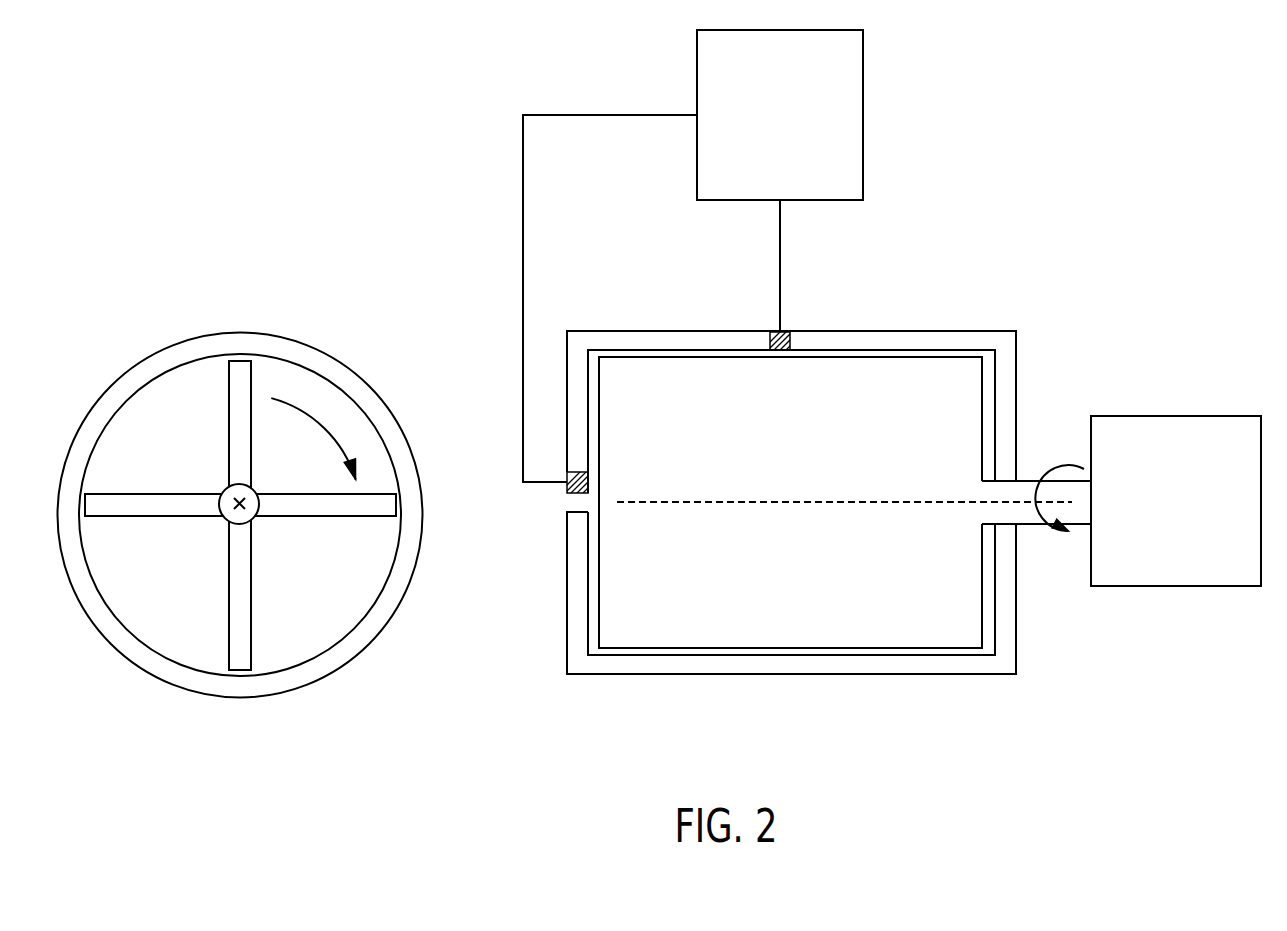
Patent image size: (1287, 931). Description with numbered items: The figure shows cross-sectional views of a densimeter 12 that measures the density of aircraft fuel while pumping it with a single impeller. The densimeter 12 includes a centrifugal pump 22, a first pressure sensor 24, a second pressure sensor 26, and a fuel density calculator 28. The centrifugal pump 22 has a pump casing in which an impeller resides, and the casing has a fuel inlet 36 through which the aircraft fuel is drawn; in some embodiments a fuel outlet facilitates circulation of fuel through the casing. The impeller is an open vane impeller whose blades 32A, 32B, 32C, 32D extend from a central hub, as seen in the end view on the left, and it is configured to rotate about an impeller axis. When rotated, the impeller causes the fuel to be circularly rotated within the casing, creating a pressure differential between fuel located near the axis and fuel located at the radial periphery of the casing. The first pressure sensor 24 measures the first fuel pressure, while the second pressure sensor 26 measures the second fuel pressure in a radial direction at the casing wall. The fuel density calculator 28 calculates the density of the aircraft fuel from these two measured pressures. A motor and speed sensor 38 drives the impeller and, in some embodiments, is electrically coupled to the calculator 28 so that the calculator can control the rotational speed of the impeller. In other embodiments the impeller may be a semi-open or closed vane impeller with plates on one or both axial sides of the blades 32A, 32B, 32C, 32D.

The densimeter 12 is at (280, 313).
The centrifugal pump 22 is at (1096, 375).
The first pressure sensor 24 is at (578, 480).
The second pressure sensor 26 is at (783, 345).
The fuel density calculator 28 is at (695, 60).
The impeller blade 32A is at (298, 500).
The impeller blade 32B is at (232, 413).
The impeller blade 32C is at (153, 505).
The impeller blade 32D is at (238, 630).
The fuel inlet 36 is at (567, 500).
The motor and speed sensor 38 is at (1242, 416).